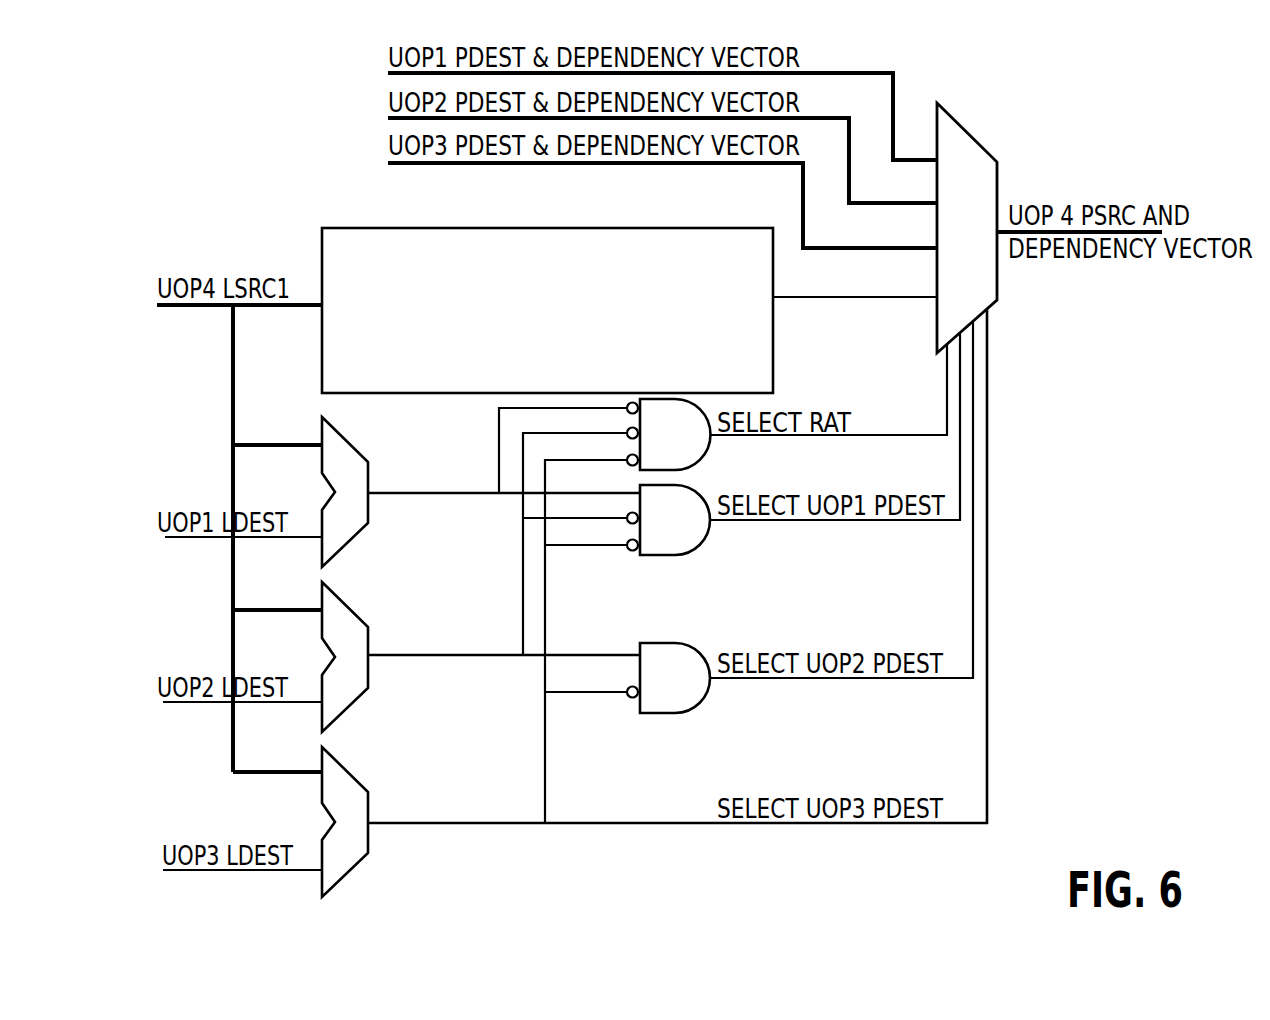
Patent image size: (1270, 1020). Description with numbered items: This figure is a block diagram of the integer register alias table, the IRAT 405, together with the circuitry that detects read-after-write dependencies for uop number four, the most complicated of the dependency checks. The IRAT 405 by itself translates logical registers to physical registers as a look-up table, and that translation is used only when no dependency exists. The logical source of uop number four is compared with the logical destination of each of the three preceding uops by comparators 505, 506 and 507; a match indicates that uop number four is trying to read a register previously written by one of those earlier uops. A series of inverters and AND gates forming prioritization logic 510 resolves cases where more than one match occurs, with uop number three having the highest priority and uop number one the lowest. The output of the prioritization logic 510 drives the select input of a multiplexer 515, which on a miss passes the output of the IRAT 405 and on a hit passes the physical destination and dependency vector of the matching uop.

The IRAT 405 is at (735, 378).
The comparator 505 is at (345, 438).
The comparator 506 is at (345, 601).
The comparator 507 is at (345, 766).
The prioritization logic 510 is at (641, 754).
The multiplexer 515 is at (969, 131).